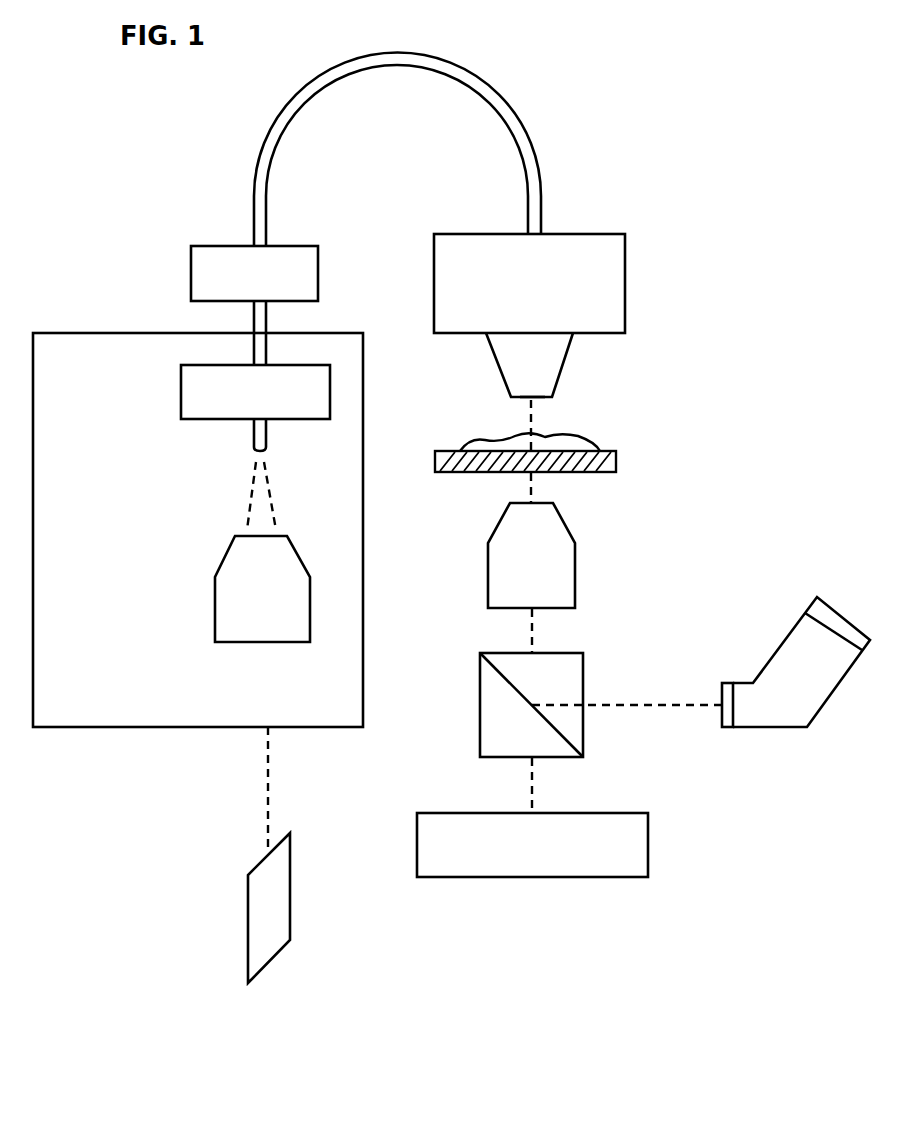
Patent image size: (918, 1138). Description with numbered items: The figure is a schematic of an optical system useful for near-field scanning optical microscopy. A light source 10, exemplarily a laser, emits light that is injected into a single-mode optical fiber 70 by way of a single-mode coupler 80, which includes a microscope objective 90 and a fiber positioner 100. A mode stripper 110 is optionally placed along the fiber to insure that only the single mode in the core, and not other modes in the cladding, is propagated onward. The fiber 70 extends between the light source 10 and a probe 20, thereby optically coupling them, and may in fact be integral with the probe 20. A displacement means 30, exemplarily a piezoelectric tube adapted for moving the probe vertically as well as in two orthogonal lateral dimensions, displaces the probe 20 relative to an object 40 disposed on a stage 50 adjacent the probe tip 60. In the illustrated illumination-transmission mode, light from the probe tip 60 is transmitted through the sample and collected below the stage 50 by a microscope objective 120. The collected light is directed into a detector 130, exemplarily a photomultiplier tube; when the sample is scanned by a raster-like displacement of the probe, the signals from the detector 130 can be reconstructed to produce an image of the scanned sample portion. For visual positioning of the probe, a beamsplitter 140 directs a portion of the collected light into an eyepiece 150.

The light source 10 is at (293, 931).
The probe 20 is at (564, 352).
The displacement means 30 is at (578, 234).
The object 40 is at (578, 437).
The stage 50 is at (616, 463).
The probe tip 60 is at (547, 398).
The single-mode optical fiber 70 is at (498, 100).
The single-mode coupler 80 is at (325, 333).
The microscope objective 90 is at (268, 642).
The fiber positioner 100 is at (295, 365).
The mode stripper 110 is at (292, 246).
The microscope objective 120 is at (567, 528).
The detector 130 is at (605, 813).
The beamsplitter 140 is at (558, 653).
The eyepiece 150 is at (785, 727).